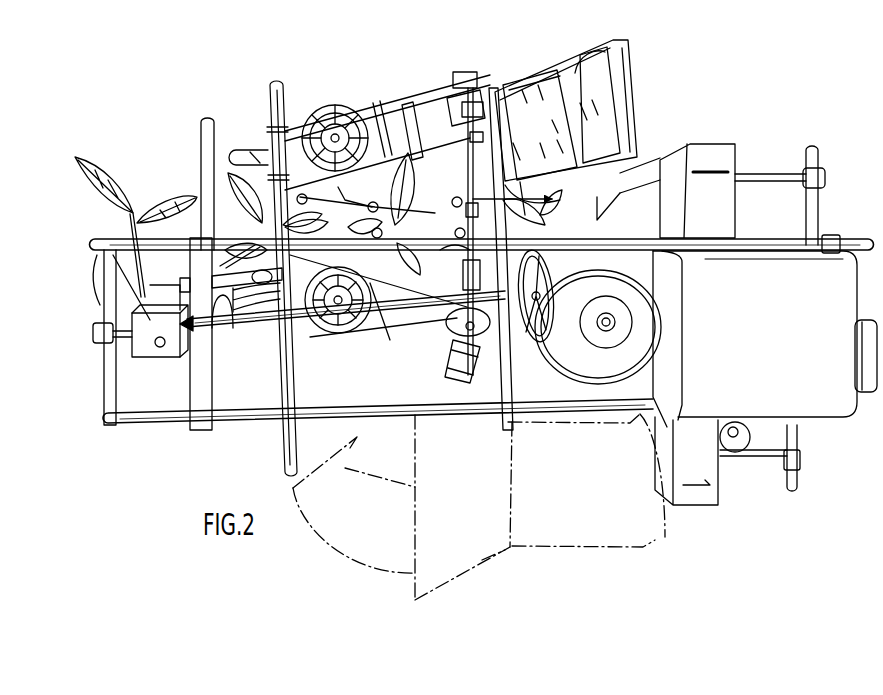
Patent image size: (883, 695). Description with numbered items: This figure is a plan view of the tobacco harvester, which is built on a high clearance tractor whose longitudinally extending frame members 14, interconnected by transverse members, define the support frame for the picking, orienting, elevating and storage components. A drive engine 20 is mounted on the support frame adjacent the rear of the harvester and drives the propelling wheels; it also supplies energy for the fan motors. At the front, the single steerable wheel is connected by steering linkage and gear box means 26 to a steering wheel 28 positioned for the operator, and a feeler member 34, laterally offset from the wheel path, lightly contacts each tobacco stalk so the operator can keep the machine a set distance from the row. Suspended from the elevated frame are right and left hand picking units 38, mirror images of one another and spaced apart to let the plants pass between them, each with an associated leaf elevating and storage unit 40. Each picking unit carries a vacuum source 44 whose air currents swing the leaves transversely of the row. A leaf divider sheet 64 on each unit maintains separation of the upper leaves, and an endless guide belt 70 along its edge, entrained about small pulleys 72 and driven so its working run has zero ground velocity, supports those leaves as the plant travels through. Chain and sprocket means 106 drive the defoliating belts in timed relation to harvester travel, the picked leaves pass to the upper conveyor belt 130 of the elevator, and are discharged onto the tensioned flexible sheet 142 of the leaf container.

The longitudinally extending frame members 14 is at (338, 409).
The drive engine 20 is at (783, 349).
The steering linkage and gear box means 26 is at (258, 320).
The steering wheel 28 is at (533, 333).
The feeler member 34 is at (203, 212).
The picking units 38 is at (357, 100).
The leaf elevating and storage units 40 is at (566, 120).
The vacuum source 44 is at (333, 103).
The leaf divider sheet 64 is at (388, 173).
The endless guide belt 70 is at (377, 204).
The small pulleys 72 is at (398, 196).
The chain and sprocket means 106 is at (452, 153).
The upper conveyor belt 130 is at (545, 136).
The flexible sheet 142 is at (617, 137).